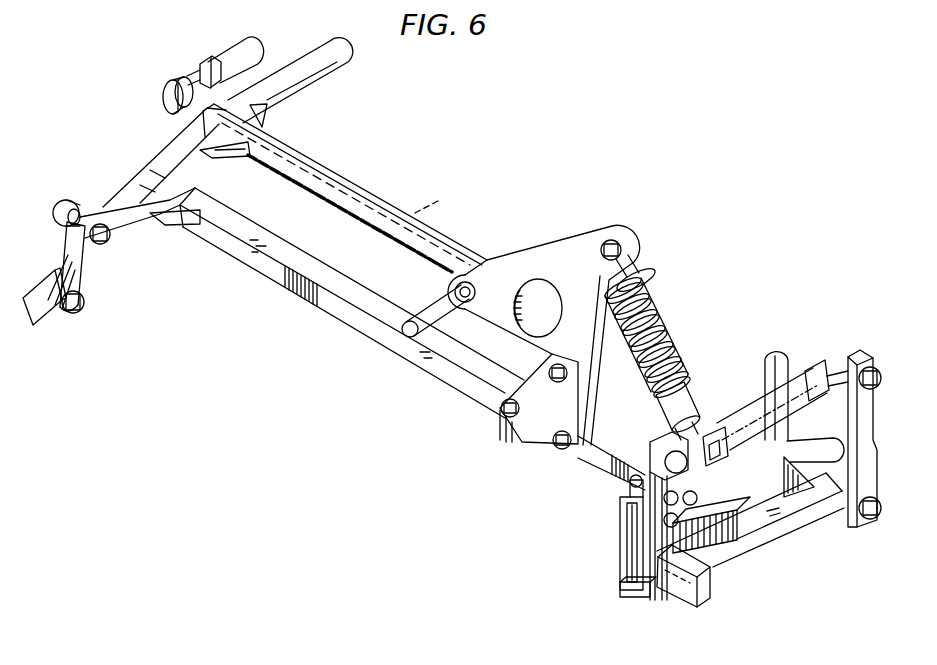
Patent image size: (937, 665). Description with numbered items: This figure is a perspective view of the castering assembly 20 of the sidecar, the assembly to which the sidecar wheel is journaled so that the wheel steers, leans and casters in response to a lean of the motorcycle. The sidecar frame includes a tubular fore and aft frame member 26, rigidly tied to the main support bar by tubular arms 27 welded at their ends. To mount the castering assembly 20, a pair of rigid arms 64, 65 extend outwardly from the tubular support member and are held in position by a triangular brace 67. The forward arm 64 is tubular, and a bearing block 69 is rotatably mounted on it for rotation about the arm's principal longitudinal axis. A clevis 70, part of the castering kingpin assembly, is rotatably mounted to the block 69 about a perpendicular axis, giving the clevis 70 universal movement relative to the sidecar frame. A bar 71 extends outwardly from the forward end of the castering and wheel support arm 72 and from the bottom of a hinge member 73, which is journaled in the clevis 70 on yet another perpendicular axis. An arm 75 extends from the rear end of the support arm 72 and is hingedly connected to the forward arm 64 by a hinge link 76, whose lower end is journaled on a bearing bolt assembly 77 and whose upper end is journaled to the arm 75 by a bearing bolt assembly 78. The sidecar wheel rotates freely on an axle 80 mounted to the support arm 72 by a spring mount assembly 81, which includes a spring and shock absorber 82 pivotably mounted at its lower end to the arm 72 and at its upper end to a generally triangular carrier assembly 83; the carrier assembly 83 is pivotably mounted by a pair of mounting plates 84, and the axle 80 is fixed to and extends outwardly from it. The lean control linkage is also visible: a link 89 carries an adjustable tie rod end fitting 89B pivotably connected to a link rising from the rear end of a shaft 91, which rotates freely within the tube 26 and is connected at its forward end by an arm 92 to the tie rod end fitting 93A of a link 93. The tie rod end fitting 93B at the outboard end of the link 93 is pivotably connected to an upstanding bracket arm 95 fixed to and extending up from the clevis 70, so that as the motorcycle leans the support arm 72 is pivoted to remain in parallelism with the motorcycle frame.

The castering assembly 20 is at (288, 293).
The tubular fore and aft frame member 26 is at (364, 203).
The tubular arms 27 is at (317, 56).
The forward arm 64 is at (806, 518).
The rigid arm 65 is at (165, 160).
The triangular brace 67 is at (226, 162).
The bearing block 69 is at (685, 606).
The clevis 70 is at (624, 596).
The bar 71 is at (717, 537).
The castering and wheel support arm 72 is at (386, 343).
The hinge member 73 is at (633, 534).
The arm 75 is at (110, 212).
The hinge link 76 is at (88, 268).
The bearing bolt assembly 77 is at (85, 305).
The bearing bolt assembly 78 is at (108, 240).
The axle 80 is at (434, 314).
The spring mount assembly 81 is at (659, 347).
The spring and shock absorber 82 is at (674, 342).
The carrier assembly 83 is at (581, 250).
The mounting plates 84 is at (548, 430).
The link 89 is at (237, 50).
The tie rod end fitting 89B is at (172, 88).
The shaft 91 is at (436, 194).
The arm 92 is at (860, 345).
The link 93 is at (798, 380).
The tie rod end fitting 93A is at (826, 360).
The tie rod end fitting 93B is at (706, 435).
The upstanding bracket arm 95 is at (650, 432).